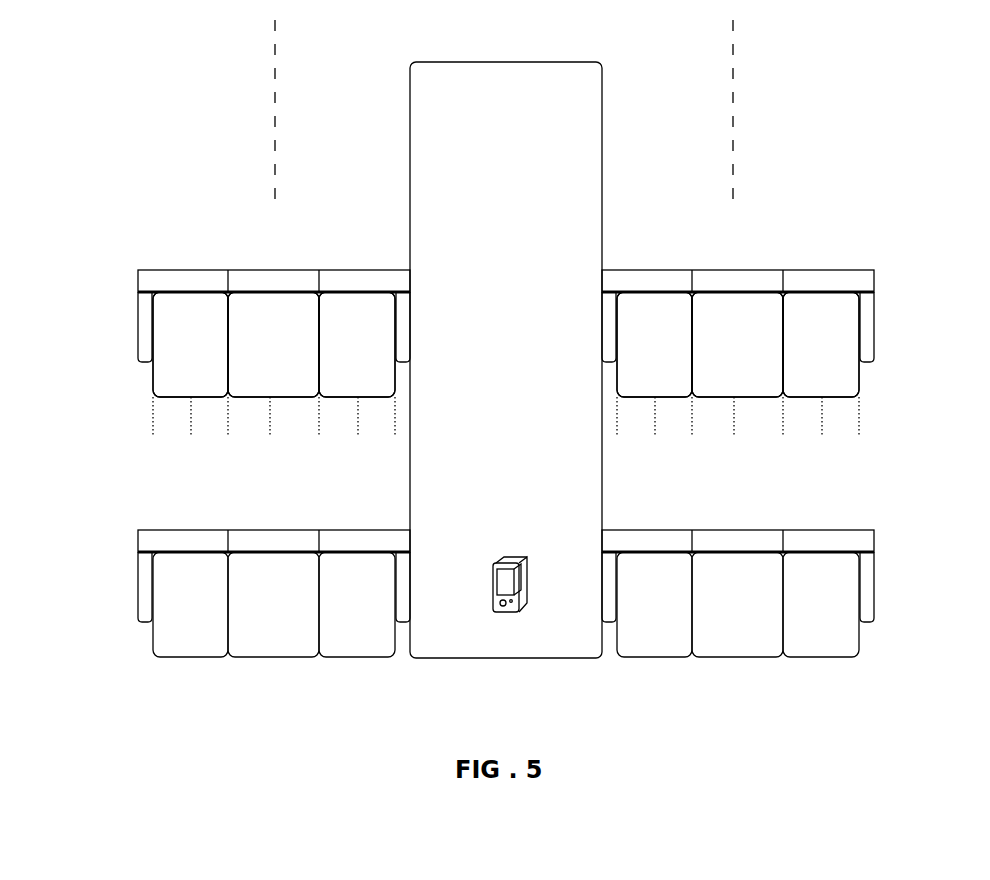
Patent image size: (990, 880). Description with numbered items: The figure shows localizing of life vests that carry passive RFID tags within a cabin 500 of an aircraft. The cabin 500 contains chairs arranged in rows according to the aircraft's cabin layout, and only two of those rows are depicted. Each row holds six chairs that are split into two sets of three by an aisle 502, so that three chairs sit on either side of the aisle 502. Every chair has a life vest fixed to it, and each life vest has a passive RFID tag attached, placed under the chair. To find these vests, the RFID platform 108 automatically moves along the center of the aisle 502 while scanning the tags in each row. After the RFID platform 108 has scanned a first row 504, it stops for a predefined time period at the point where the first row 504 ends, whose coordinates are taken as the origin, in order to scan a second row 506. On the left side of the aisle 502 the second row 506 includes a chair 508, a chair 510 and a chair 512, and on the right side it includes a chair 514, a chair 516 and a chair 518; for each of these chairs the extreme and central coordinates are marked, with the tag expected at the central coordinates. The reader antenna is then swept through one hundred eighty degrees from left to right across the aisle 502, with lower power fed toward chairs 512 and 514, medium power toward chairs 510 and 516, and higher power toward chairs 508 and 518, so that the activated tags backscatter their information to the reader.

The cabin 500 is at (491, 339).
The aisle 502 is at (603, 188).
The first row 504 is at (872, 595).
The second row 506 is at (872, 335).
The chair 508 is at (170, 270).
The chair 510 is at (253, 270).
The chair 512 is at (347, 270).
The chair 514 is at (640, 270).
The chair 516 is at (725, 270).
The chair 518 is at (818, 270).
The RFID platform 108 is at (495, 599).